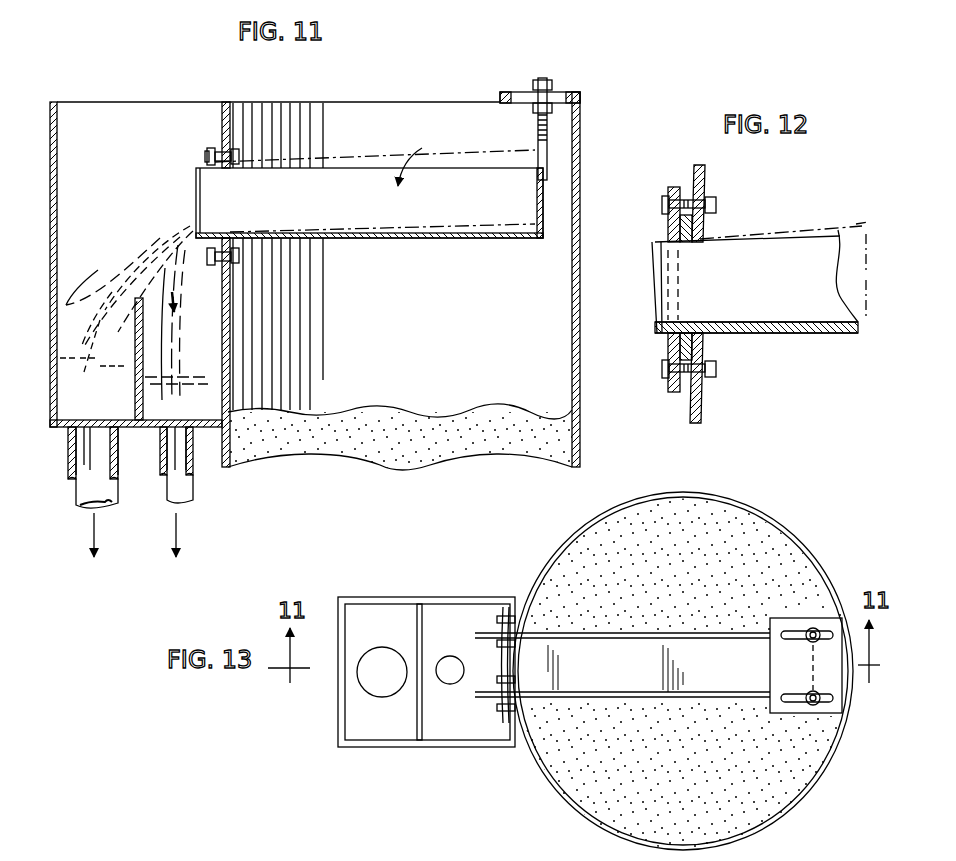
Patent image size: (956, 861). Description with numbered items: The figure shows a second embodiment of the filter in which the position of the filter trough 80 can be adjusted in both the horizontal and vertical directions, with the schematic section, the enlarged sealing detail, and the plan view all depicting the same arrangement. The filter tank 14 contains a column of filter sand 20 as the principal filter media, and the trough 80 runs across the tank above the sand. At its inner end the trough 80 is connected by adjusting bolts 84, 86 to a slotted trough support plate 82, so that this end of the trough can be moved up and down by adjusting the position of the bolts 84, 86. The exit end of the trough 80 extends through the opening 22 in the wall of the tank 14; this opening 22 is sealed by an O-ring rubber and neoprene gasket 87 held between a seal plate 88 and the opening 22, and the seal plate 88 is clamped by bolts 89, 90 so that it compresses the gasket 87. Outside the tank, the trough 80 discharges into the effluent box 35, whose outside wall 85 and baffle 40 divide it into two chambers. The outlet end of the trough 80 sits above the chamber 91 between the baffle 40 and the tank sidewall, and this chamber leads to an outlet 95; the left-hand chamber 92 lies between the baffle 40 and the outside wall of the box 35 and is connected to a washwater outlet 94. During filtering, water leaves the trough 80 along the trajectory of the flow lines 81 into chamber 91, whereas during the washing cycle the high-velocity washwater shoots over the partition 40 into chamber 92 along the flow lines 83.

In FIG. 11, the filter tank 14 is at (580, 372).
In FIG. 12, the filter tank 14 is at (703, 412).
In FIG. 11, the filter sand 20 is at (373, 455).
In FIG. 13, the filter sand 20 is at (588, 542).
In FIG. 11, the opening 22 is at (238, 243).
In FIG. 12, the opening 22 is at (700, 237).
In FIG. 13, the effluent box 35 is at (437, 745).
In FIG. 11, the baffle 40 is at (135, 352).
In FIG. 13, the baffle 40 is at (418, 622).
In FIG. 11, the filter trough 80 is at (468, 210).
In FIG. 12, the filter trough 80 is at (822, 310).
In FIG. 13, the filter trough 80 is at (543, 690).
In FIG. 11, the flow lines 81 is at (166, 283).
In FIG. 11, the slotted trough support plate 82 is at (502, 97).
In FIG. 13, the slotted trough support plate 82 is at (778, 628).
In FIG. 11, the flow lines 83 is at (160, 236).
In FIG. 11, the adjusting bolt 84 is at (538, 134).
In FIG. 13, the adjusting bolt 84 is at (818, 632).
In FIG. 11, the housing wall 85 is at (50, 338).
In FIG. 13, the adjusting bolt 86 is at (816, 704).
In FIG. 11, the O-ring rubber and neoprene gasket 87 is at (248, 165).
In FIG. 12, the O-ring rubber and neoprene gasket 87 is at (680, 350).
In FIG. 11, the seal plate 88 is at (198, 165).
In FIG. 12, the seal plate 88 is at (668, 228).
In FIG. 11, the bolt 89 is at (222, 258).
In FIG. 12, the bolt 89 is at (712, 373).
In FIG. 11, the bolt 90 is at (243, 148).
In FIG. 12, the bolt 90 is at (704, 195).
In FIG. 11, the chamber 91 is at (208, 348).
In FIG. 13, the chamber 91 is at (460, 633).
In FIG. 11, the chamber 92 is at (114, 408).
In FIG. 13, the chamber 92 is at (392, 633).
In FIG. 11, the washwater outlet 94 is at (73, 493).
In FIG. 13, the washwater outlet 94 is at (385, 690).
In FIG. 11, the outlet 95 is at (193, 492).
In FIG. 13, the outlet 95 is at (452, 682).